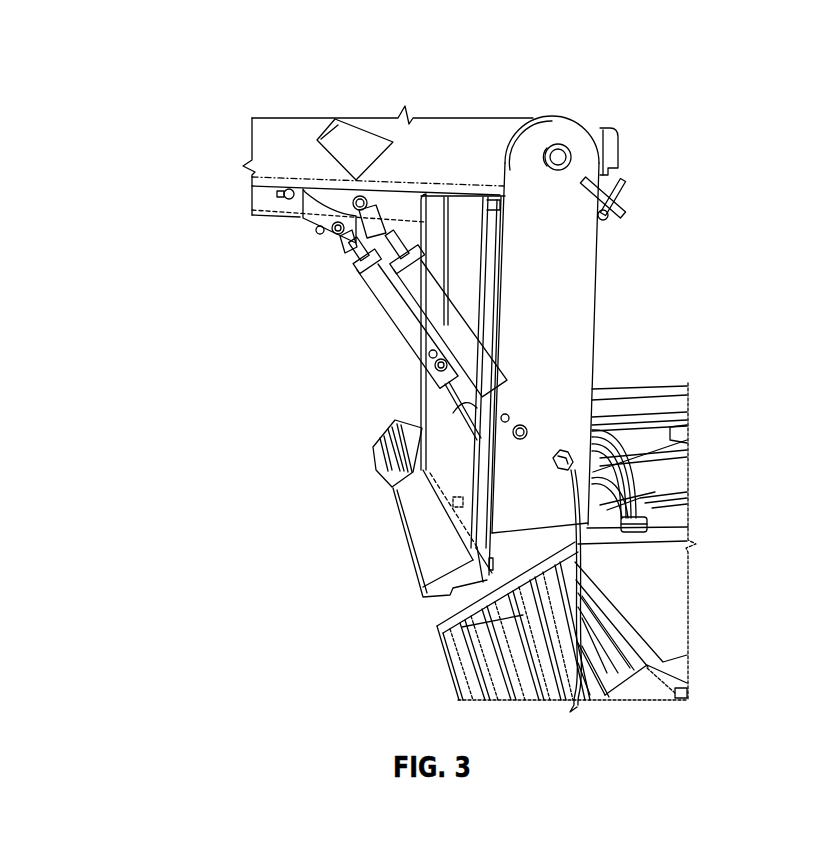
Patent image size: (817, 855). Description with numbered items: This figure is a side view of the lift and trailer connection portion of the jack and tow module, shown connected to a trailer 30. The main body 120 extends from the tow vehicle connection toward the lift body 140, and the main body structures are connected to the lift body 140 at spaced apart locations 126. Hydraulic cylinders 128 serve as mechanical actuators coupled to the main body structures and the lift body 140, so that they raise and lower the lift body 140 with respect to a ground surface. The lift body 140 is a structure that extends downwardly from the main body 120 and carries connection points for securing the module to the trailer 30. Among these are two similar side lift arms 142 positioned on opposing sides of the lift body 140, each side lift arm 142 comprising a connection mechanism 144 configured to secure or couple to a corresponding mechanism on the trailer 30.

The main body 120 is at (258, 149).
The spaced apart locations 126 is at (633, 140).
The lift body 140 is at (564, 300).
The hydraulic cylinders 128 is at (386, 308).
The side lift arm 142 is at (436, 365).
The connection mechanism 144 is at (488, 477).
The trailer 30 is at (680, 430).